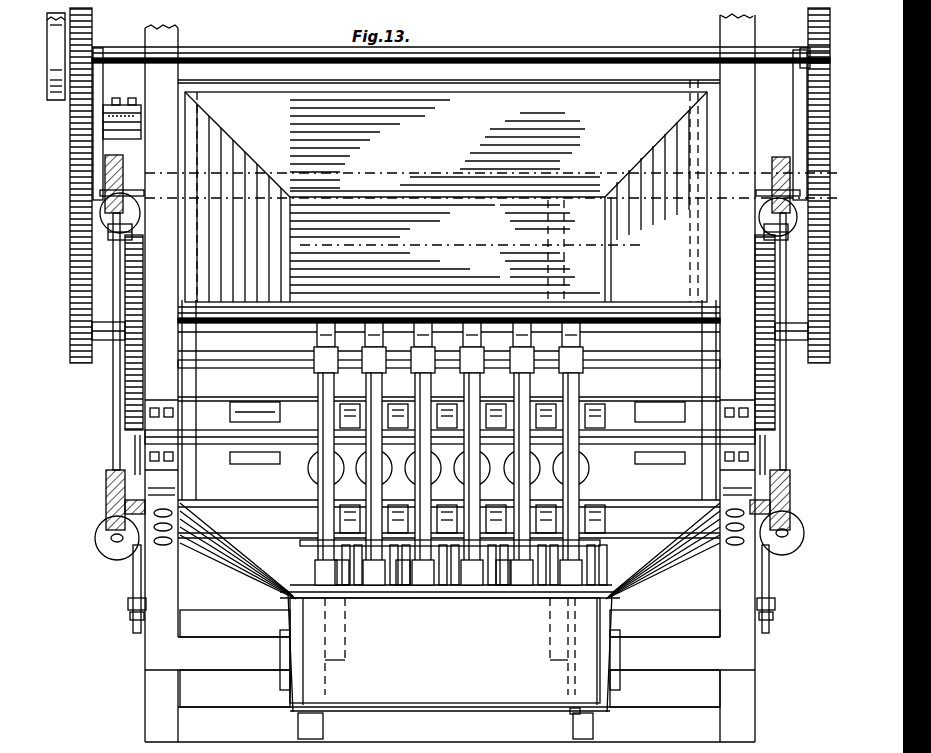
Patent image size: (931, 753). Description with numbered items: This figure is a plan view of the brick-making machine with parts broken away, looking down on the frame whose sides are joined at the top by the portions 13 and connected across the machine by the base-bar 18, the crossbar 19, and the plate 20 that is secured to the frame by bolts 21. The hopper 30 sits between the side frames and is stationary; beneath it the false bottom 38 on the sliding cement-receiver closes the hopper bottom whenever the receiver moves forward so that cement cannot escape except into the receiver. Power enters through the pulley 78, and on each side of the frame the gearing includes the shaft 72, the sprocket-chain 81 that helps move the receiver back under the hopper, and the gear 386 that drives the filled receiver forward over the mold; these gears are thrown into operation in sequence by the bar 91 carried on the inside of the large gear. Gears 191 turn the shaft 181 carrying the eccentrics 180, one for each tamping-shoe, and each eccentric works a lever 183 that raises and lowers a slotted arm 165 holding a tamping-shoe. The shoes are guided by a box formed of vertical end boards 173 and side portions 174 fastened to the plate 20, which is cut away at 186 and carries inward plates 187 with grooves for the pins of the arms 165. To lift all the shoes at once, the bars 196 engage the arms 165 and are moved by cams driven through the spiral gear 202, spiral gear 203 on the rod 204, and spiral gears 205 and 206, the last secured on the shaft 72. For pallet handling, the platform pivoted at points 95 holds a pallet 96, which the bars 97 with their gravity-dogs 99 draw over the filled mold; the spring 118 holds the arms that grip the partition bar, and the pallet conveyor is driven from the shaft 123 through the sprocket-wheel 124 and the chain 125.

The top frame portion 13 is at (450, 378).
The base-bar 18 is at (450, 706).
The crossbar 19 is at (450, 653).
The plate 20 is at (222, 568).
The bolts 21 is at (163, 545).
The hopper 30 is at (446, 191).
The false bottom 38 is at (445, 249).
The shaft 72 is at (75, 192).
The pulley 78 is at (58, 100).
The sprocket-chain 81 is at (132, 578).
The bar 91 is at (93, 86).
The pivot points 95 is at (282, 654).
The pallet 96 is at (445, 650).
The bars 97 is at (315, 680).
The gravity-dogs 99 is at (570, 716).
The spring 118 is at (297, 728).
The shaft 123 is at (127, 604).
The sprocket-wheel 124 is at (130, 622).
The chain 125 is at (133, 447).
The arms 165 is at (452, 545).
The vertical end boards 173 is at (295, 480).
The side portions 174 is at (388, 375).
The eccentrics 180 is at (317, 340).
The shaft 181 is at (592, 342).
The lever 183 is at (323, 382).
The cut-out portions 186 is at (365, 598).
The plates 187 is at (400, 585).
The gears 191 is at (775, 283).
The bar 196 is at (583, 478).
The spiral gear 202 is at (106, 490).
The spiral gear 203 is at (105, 535).
The rod 204 is at (113, 387).
The spiral gear 205 is at (100, 232).
The spiral gear 206 is at (123, 162).
The gear 386 is at (70, 335).